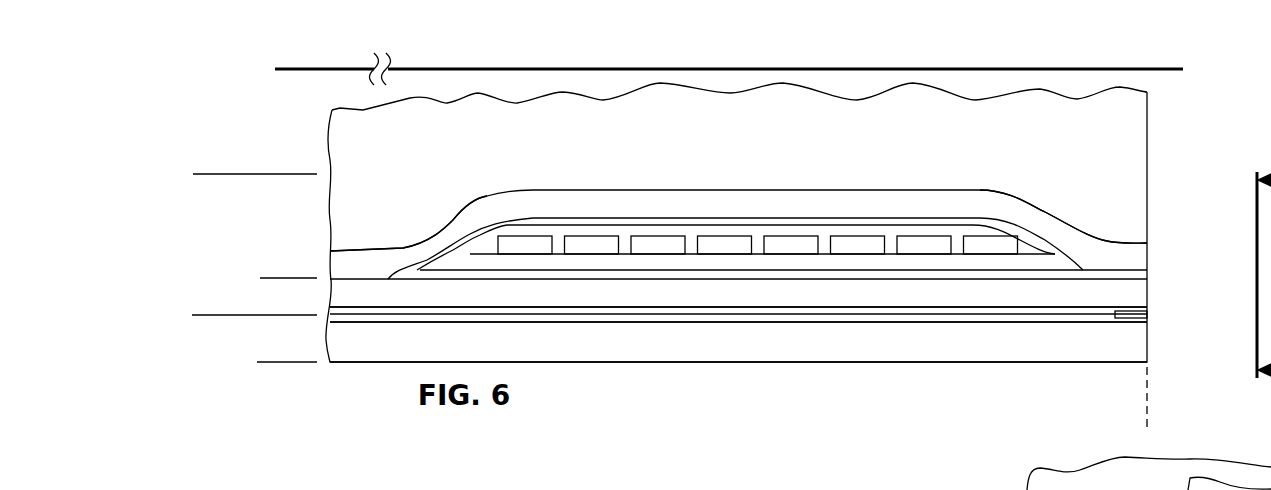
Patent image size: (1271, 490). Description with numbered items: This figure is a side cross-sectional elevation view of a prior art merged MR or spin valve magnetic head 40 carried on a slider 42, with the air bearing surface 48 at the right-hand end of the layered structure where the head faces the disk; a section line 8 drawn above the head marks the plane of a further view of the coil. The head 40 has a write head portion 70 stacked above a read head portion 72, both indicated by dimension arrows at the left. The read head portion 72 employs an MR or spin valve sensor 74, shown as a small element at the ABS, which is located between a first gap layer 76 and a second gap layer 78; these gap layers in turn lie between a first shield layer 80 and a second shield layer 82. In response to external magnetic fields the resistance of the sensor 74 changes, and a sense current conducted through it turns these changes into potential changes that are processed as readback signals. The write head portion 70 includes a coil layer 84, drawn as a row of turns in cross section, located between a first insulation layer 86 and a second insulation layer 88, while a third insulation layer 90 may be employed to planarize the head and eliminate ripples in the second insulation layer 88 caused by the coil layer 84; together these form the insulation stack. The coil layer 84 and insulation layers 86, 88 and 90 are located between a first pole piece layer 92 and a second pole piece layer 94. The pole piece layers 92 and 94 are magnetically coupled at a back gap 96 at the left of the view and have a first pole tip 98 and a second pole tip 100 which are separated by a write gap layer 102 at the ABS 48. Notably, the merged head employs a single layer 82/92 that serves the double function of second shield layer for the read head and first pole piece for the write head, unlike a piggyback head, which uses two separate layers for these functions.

The section line 8-8 / magnetic medium 8 is at (1173, 54).
The magnetic head 40 is at (312, 112).
The slider 42 is at (1132, 122).
The air bearing surface 48 is at (1192, 397).
The write head portion 70 is at (274, 264).
The read head portion 72 is at (274, 378).
The MR or spin valve sensor 74 is at (1147, 315).
The first gap layer 76 is at (808, 322).
The second gap layer 78 is at (775, 304).
The first shield layer 80 is at (885, 347).
The second shield layer 82 is at (988, 293).
The first pole piece layer 92 is at (988, 293).
The coil layer 84 is at (787, 238).
The first insulation layer 86 is at (663, 263).
The second insulation layer 88 is at (1033, 247).
The third insulation layer 90 is at (565, 220).
The second pole piece layer 94 is at (887, 200).
The back gap 96 is at (360, 249).
The first pole tip 98 is at (1147, 293).
The second pole tip 100 is at (1140, 253).
The write gap layer 102 is at (1147, 272).